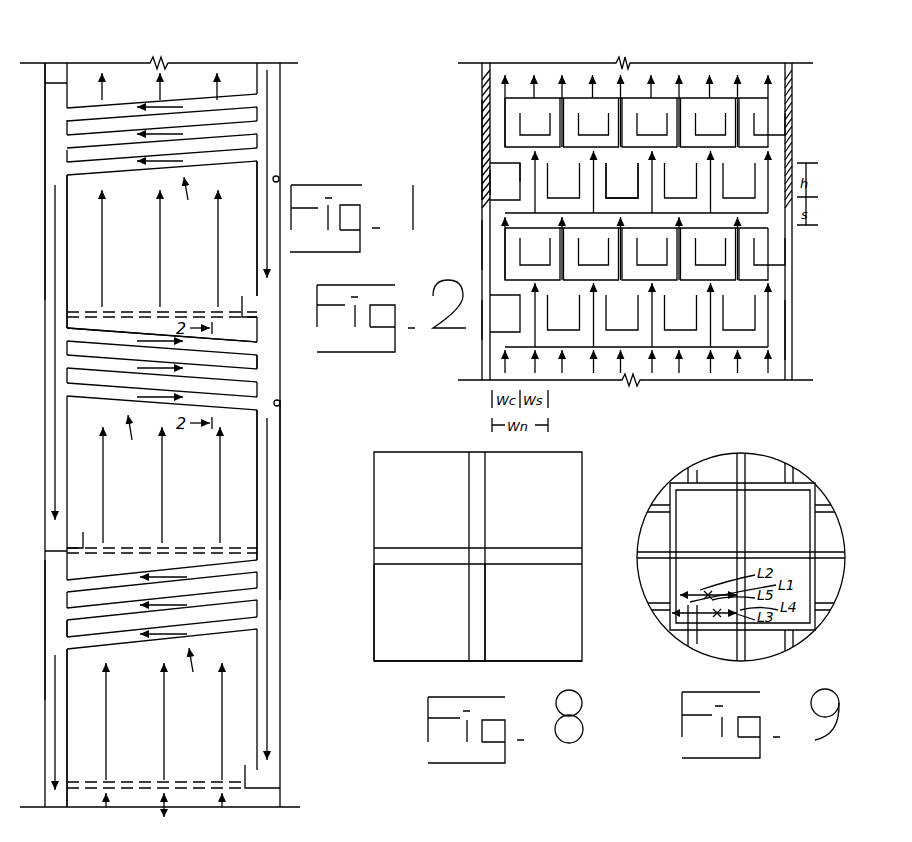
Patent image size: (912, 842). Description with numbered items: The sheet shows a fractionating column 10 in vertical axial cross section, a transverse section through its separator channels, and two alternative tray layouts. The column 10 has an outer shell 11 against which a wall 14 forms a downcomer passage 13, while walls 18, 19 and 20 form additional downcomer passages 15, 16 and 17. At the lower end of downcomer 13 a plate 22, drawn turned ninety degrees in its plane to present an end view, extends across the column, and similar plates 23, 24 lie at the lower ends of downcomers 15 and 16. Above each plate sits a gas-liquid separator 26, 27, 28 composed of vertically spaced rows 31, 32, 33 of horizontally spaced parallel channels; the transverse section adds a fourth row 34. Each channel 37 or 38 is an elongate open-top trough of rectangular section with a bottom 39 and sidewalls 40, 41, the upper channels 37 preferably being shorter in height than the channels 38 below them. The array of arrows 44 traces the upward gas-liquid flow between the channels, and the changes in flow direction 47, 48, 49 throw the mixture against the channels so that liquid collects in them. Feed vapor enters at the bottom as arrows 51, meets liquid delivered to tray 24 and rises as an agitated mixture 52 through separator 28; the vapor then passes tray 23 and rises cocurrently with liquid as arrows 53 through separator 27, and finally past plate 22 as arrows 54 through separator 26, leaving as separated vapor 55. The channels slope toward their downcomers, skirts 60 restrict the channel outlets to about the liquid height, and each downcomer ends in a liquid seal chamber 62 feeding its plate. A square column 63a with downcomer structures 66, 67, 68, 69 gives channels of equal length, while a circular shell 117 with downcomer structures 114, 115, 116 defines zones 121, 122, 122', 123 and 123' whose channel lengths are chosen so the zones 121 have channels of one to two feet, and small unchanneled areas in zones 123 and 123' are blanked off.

In FIG. 1, the column 10 is at (290, 449).
In FIG. 1, the outer shell 11 is at (281, 485).
In FIG. 2, the outer shell 11 is at (795, 338).
In FIG. 1, the downcomer passage 13 is at (282, 180).
In FIG. 1, the wall 14 is at (258, 175).
In FIG. 1, the downcomer passage 15 is at (45, 300).
In FIG. 1, the downcomer passage 16 is at (281, 403).
In FIG. 1, the downcomer passage 17 is at (47, 618).
In FIG. 1, the wall 18 is at (67, 218).
In FIG. 1, the wall 19 is at (259, 514).
In FIG. 1, the wall 20 is at (67, 684).
In FIG. 1, the plate 22 is at (98, 322).
In FIG. 1, the plate 23 is at (233, 558).
In FIG. 1, the plate 24 is at (193, 782).
In FIG. 1, the gas-liquid separator 26 is at (187, 201).
In FIG. 1, the gas-liquid separator 27 is at (132, 438).
In FIG. 1, the gas-liquid separator 28 is at (189, 671).
In FIG. 1, the row of channels 31 is at (207, 622).
In FIG. 2, the row of channels 31 is at (478, 124).
In FIG. 1, the row of channels 32 is at (203, 600).
In FIG. 2, the row of channels 32 is at (478, 175).
In FIG. 1, the row of channels 33 is at (200, 595).
In FIG. 2, the row of channels 33 is at (478, 248).
In FIG. 2, the fourth row of channels 34 is at (475, 310).
In FIG. 2, the channel 37 is at (752, 128).
In FIG. 2, the channel 38 is at (700, 190).
In FIG. 2, the bottom 39 is at (490, 203).
In FIG. 2, the sidewall 40 is at (490, 178).
In FIG. 2, the sidewall 41 is at (520, 168).
In FIG. 2, the arrows 44 is at (708, 90).
In FIG. 2, the change in flow direction 47 is at (622, 309).
In FIG. 2, the change in flow direction 48 is at (770, 280).
In FIG. 2, the change in flow direction 49 is at (622, 213).
In FIG. 1, the arrows 51 is at (164, 812).
In FIG. 1, the arrows 52 is at (162, 722).
In FIG. 1, the arrows 53 is at (162, 490).
In FIG. 1, the arrows 54 is at (160, 233).
In FIG. 1, the arrows 55 is at (218, 88).
In FIG. 1, the skirt 60 is at (259, 377).
In FIG. 1, the liquid seal chamber 62 is at (241, 301).
In FIG. 8, the column 63a is at (402, 668).
In FIG. 8, the downcomer structure 66 is at (416, 566).
In FIG. 8, the downcomer structure 67 is at (488, 603).
In FIG. 8, the downcomer structure 68 is at (521, 548).
In FIG. 8, the downcomer structure 69 is at (469, 496).
In FIG. 9, the downcomer structure 114 is at (787, 553).
In FIG. 9, the downcomer structure 115 is at (683, 514).
In FIG. 9, the downcomer structure 116 is at (750, 545).
In FIG. 9, the circular column shell 117 is at (650, 530).
In FIG. 9, the zone 121 is at (718, 538).
In FIG. 9, the zone 122 is at (741, 552).
In FIG. 9, the zone 122' is at (747, 557).
In FIG. 9, the zone 123 is at (752, 560).
In FIG. 9, the zone 123' is at (751, 568).